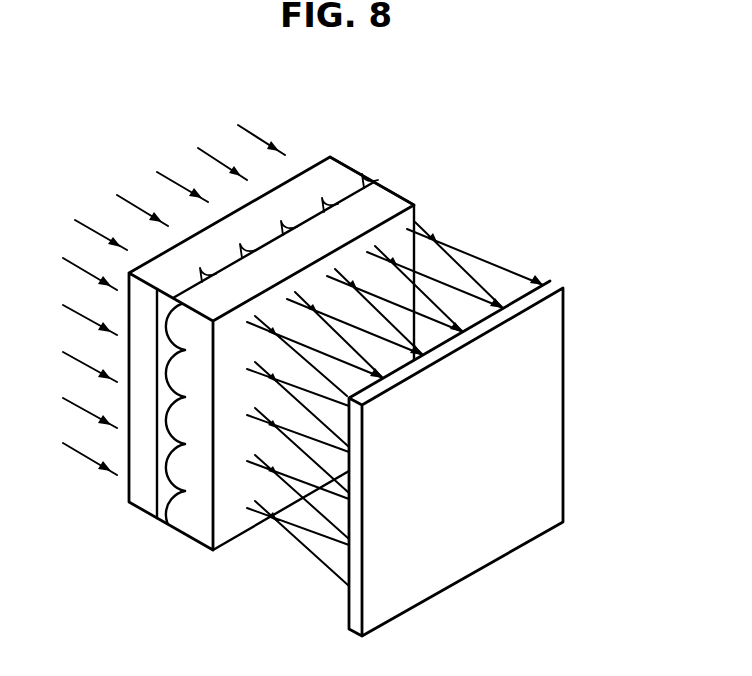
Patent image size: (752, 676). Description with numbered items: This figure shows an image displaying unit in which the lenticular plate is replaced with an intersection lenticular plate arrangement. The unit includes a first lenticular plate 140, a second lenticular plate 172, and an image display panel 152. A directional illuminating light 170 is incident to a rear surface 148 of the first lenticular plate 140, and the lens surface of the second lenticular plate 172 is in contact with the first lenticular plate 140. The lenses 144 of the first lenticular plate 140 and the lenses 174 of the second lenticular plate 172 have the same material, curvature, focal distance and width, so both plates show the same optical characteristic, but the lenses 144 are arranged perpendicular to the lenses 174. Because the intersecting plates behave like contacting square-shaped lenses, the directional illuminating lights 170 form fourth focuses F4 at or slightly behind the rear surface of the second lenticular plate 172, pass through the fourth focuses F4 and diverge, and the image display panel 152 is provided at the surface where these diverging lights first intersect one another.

The first lenticular plate 140 is at (340, 152).
The lenses of the first lenticular plate 144 is at (357, 184).
The rear surface 148 is at (127, 483).
The image display panel 152 is at (562, 286).
The directional illuminating light 170 is at (215, 157).
The second lenticular plate 172 is at (399, 192).
The lenses of the second lenticular plate 174 is at (177, 515).
The fourth focuses F4 is at (437, 237).